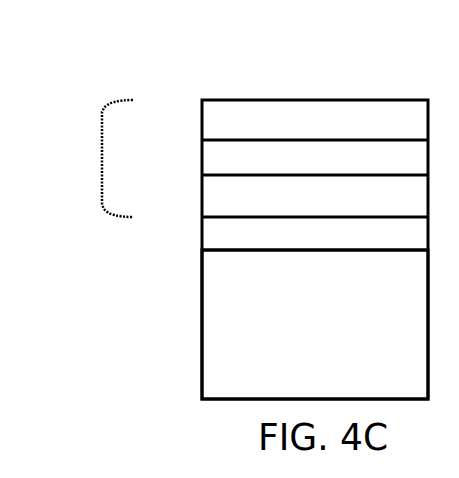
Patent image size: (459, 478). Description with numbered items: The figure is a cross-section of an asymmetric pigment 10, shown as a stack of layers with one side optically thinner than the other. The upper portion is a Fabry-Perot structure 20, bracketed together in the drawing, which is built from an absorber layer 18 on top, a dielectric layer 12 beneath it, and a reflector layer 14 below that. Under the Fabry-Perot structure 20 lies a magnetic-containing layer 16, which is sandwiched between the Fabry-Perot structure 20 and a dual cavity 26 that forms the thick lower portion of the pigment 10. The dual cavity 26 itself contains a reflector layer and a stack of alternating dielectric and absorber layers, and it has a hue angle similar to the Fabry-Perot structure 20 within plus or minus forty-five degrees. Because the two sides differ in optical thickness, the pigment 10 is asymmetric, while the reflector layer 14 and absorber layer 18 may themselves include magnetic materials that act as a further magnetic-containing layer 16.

The pigment 10 is at (272, 58).
The absorber layer 18 is at (202, 125).
The dielectric layer 12 is at (202, 157).
The reflector layer 14 is at (202, 203).
The magnetic-containing layer 16 is at (202, 242).
The dual cavity 26 is at (202, 312).
The Fabry-Perot structure 20 is at (102, 158).